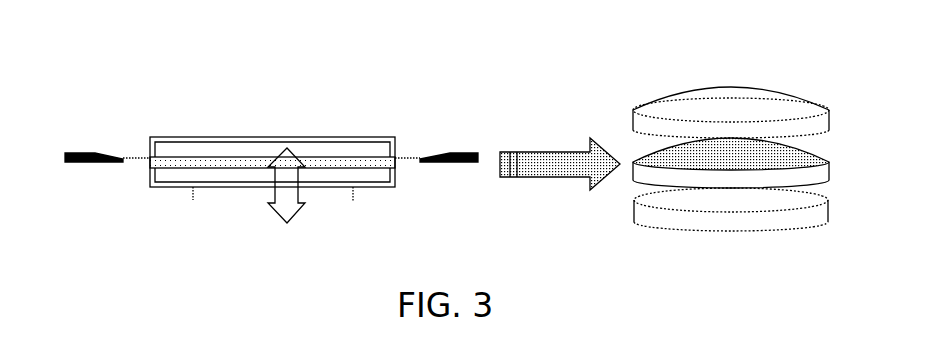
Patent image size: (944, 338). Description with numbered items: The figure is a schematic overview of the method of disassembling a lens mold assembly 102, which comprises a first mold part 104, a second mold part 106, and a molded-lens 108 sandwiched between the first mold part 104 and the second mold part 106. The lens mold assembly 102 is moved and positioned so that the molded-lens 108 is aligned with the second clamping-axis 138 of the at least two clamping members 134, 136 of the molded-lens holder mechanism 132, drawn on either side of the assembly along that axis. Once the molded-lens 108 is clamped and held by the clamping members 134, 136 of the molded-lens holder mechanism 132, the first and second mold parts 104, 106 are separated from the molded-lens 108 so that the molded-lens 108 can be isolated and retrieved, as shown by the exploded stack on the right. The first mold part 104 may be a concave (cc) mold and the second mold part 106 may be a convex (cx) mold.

The lens mold assembly 102 is at (413, 70).
The first mold part 104 is at (325, 142).
The second mold part 106 is at (384, 173).
The molded-lens 108 is at (355, 165).
The molded-lens holder mechanism 132 is at (276, 103).
The clamping member 134 is at (113, 160).
The clamping member 136 is at (433, 158).
The second clamping-axis 138 is at (137, 158).